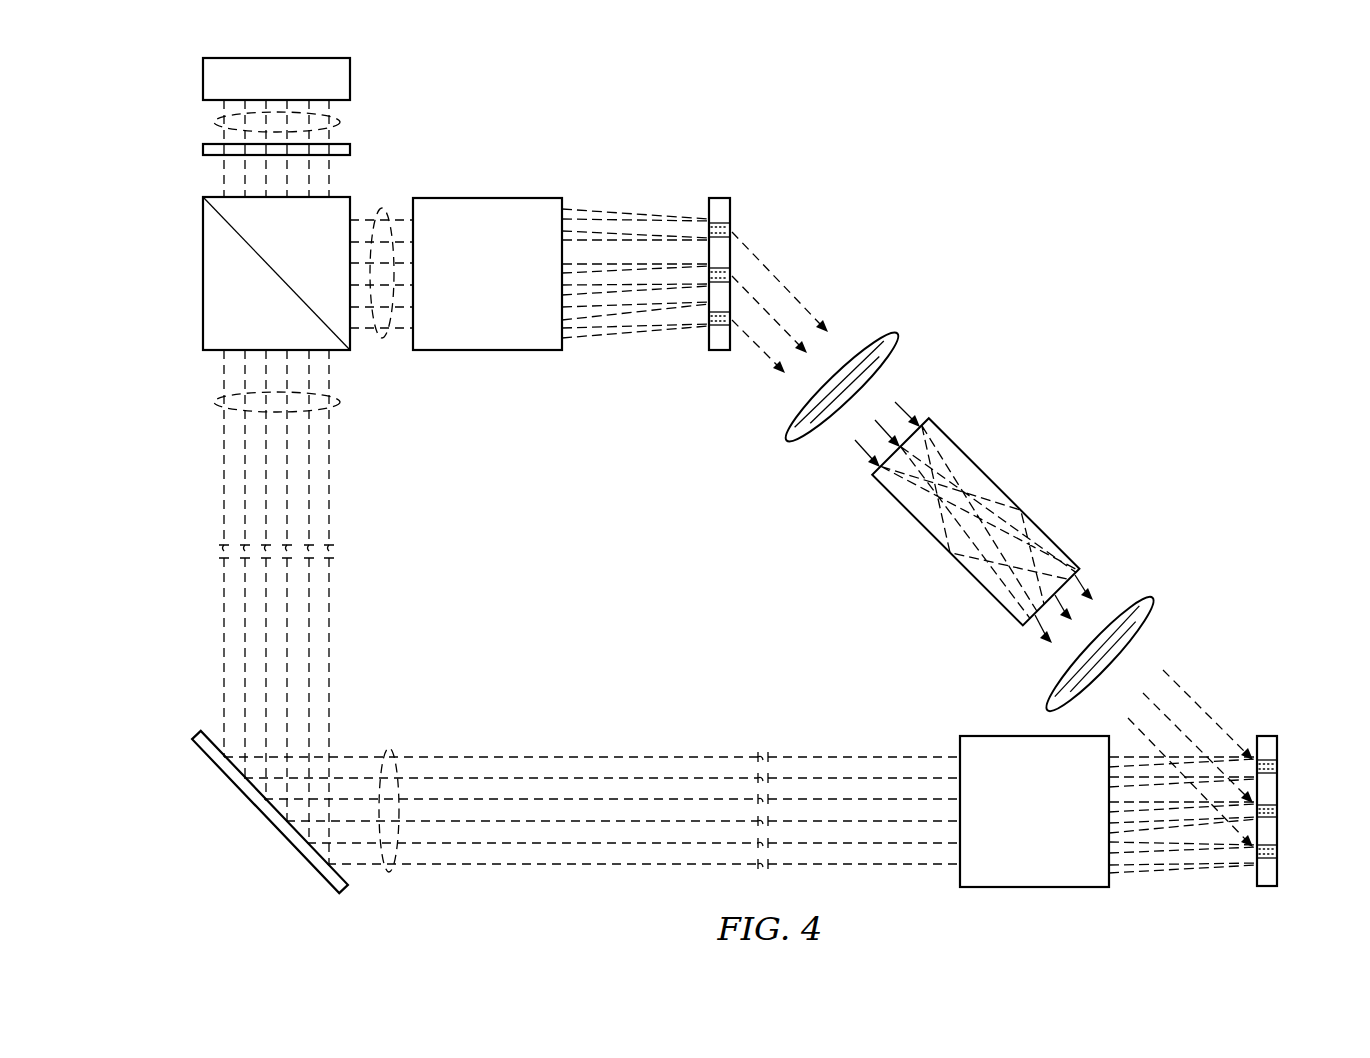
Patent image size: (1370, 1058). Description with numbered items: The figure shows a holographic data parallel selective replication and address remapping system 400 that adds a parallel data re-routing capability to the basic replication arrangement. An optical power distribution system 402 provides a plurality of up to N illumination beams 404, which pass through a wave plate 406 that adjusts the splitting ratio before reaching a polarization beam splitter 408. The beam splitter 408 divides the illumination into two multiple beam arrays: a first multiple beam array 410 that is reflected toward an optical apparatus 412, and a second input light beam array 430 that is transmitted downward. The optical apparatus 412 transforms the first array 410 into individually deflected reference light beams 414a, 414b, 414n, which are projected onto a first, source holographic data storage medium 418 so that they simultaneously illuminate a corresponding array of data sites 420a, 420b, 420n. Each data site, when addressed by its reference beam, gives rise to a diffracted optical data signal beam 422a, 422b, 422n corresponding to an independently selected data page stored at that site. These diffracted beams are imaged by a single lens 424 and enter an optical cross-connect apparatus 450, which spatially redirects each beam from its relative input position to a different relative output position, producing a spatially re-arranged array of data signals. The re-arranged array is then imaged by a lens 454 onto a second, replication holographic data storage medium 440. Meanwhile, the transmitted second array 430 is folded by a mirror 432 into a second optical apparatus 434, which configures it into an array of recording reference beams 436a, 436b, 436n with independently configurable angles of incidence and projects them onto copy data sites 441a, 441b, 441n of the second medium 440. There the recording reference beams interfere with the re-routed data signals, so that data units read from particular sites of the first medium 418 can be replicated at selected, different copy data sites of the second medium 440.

The holographic data parallel selective replication and address remapping system 400 is at (918, 197).
The optical power distribution system 402 is at (203, 78).
The illumination beams 404 is at (340, 122).
The wave plate 406 is at (203, 150).
The polarization beam splitter 408 is at (203, 270).
The first multiple beam array 410 is at (381, 206).
The optical apparatus 412 is at (487, 198).
The reference light beam 414a is at (585, 210).
The reference light beam 414b is at (575, 274).
The reference light beam 414n is at (575, 317).
The first holographic data storage medium 418 is at (718, 198).
The data site 420a is at (731, 228).
The data site 420b is at (731, 272).
The data site 420n is at (710, 320).
The diffracted optical data signal beam 422a is at (826, 320).
The diffracted optical data signal beam 422b is at (805, 348).
The diffracted optical data signal beam 422n is at (778, 363).
The lens 424 is at (897, 336).
The second input light beam array 430 is at (217, 405).
The mirror 432 is at (272, 818).
The optical apparatus 434 is at (1035, 887).
The recording reference beam 436a is at (1230, 752).
The recording reference beam 436b is at (1112, 808).
The recording reference beam 436n is at (1135, 876).
The second holographic data storage medium 440 is at (1267, 887).
The copy data site 441a is at (1278, 768).
The copy data site 441b is at (1278, 812).
The copy data site 441n is at (1278, 855).
The optical cross-connect apparatus 450 is at (1000, 489).
The lens 454 is at (1152, 601).